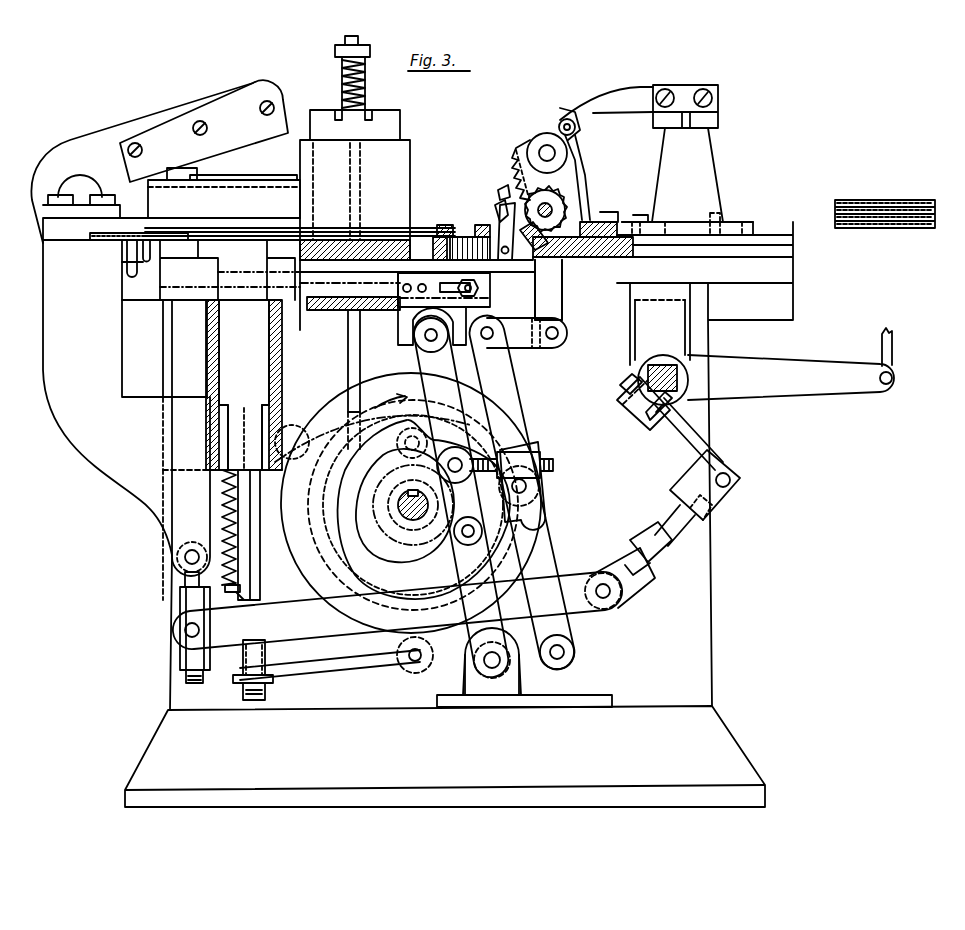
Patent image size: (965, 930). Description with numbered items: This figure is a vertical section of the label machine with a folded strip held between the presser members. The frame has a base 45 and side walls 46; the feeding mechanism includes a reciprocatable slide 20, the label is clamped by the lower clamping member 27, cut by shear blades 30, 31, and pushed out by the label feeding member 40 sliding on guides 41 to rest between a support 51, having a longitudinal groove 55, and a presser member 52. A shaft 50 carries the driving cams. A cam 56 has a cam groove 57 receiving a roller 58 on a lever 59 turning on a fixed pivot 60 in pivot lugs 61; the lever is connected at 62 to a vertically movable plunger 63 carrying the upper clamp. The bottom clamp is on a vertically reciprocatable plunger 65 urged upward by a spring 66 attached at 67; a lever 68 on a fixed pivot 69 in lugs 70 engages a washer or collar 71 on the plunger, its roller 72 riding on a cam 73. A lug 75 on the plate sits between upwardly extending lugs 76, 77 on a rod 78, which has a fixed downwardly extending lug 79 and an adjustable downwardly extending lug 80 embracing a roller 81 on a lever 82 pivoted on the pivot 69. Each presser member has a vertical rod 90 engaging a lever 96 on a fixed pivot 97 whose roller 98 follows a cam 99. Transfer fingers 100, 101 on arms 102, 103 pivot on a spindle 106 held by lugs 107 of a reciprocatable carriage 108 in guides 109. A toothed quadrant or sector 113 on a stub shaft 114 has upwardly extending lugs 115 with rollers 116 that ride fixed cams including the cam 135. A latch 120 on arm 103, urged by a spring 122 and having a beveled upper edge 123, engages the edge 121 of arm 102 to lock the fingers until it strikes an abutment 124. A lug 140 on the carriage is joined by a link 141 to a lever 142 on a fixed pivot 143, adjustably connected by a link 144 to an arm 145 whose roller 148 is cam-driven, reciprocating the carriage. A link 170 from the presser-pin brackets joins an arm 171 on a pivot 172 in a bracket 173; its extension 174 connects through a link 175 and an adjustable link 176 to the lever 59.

The reciprocatable slide 20 is at (178, 168).
The lower clamping member 27 is at (245, 245).
The shear blade 30 is at (233, 107).
The shear blade 31 is at (258, 186).
The label feeding member 40 is at (168, 233).
The guides 41 is at (206, 232).
The base 45 is at (160, 728).
The side walls 46 is at (177, 680).
The shaft 50 is at (412, 520).
The support 51 is at (297, 295).
The presser member 52 is at (410, 155).
The longitudinal groove 55 is at (332, 310).
The cam 56 is at (345, 490).
The cam groove 57 is at (345, 515).
The roller 58 is at (435, 550).
The lever 59 is at (320, 630).
The fixed pivot 60 is at (570, 578).
The pivot lugs 61 is at (575, 632).
The connection 62 is at (185, 630).
The vertically movable plunger 63 is at (180, 512).
The vertically reciprocatable plunger 65 is at (252, 554).
The spring 66 is at (222, 483).
The spring connection 67 is at (244, 592).
The lever 68 is at (335, 672).
The fixed pivot 69 is at (490, 668).
The lugs 70 is at (522, 682).
The washer or collar 71 is at (236, 683).
The roller 72 is at (408, 668).
The cam 73 is at (325, 565).
The lug 75 is at (127, 252).
The upwardly extending lug 76 is at (128, 266).
The upwardly extending lug 77 is at (152, 251).
The rod 78 is at (193, 303).
The downwardly extending lug 79 is at (399, 329).
The downwardly extending lug 80 is at (455, 315).
The roller 81 is at (416, 343).
The lever 82 is at (405, 378).
The vertical rod 90 is at (348, 345).
The lever 96 is at (298, 425).
The fixed pivot 97 is at (258, 505).
The roller 98 is at (395, 443).
The cam 99 is at (360, 458).
The transfer finger 100 is at (370, 228).
The transfer finger 101 is at (390, 234).
The arm 102 is at (443, 225).
The arm 103 is at (480, 225).
The spindle 106 is at (552, 205).
The lugs 107 is at (578, 172).
The reciprocatable carriage 108 is at (600, 262).
The guides 109 is at (770, 235).
The toothed quadrant or sector 113 is at (514, 156).
The stub shaft 114 is at (545, 150).
The upwardly extending lugs 115 is at (573, 135).
The rollers 116 is at (576, 127).
The latch 120 is at (506, 195).
The edge 121 is at (525, 235).
The spring 122 is at (506, 260).
The beveled upper edge 123 is at (502, 208).
The abutment 124 is at (632, 215).
The cam 135 is at (572, 110).
The lug 140 is at (565, 308).
The link 141 is at (528, 345).
The lever 142 is at (512, 393).
The fixed pivot 143 is at (565, 654).
The link 144 is at (505, 452).
The arm 145 is at (545, 512).
The roller 148 is at (457, 538).
The link 170 is at (892, 343).
The arm 171 is at (818, 365).
The pivot 172 is at (660, 365).
The bracket 173 is at (630, 325).
The extension 174 is at (632, 417).
The link 175 is at (680, 448).
The adjustable link 176 is at (665, 553).